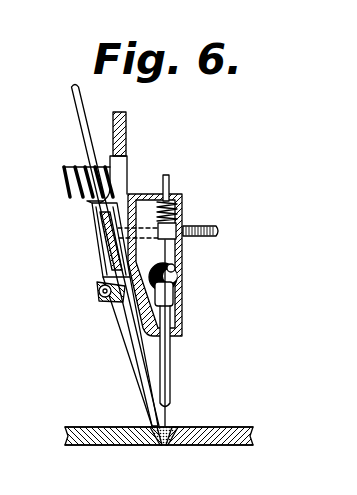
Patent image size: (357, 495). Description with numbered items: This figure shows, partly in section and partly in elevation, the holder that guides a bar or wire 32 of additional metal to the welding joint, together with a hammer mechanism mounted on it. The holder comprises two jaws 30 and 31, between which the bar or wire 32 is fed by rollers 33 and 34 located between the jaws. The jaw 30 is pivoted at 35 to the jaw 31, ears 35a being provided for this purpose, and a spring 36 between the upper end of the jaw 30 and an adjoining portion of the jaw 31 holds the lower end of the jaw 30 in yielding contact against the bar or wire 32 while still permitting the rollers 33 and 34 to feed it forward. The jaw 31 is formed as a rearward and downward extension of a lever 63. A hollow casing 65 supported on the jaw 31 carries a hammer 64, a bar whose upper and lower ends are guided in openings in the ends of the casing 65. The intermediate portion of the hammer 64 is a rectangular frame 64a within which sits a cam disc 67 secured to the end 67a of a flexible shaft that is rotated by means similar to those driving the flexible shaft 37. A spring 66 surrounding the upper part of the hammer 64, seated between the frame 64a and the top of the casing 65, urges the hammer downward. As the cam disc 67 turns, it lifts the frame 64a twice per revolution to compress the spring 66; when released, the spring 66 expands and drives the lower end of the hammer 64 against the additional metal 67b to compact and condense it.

The jaw 30 is at (135, 382).
The jaw 31 is at (163, 394).
The bar or wire 32 is at (75, 109).
The feeding roller 33 is at (96, 224).
The feeding roller 34 is at (101, 236).
The pivot 35 is at (99, 298).
The ears 35a is at (100, 303).
The spring 36 is at (83, 168).
The flexible shaft 37 is at (208, 226).
The lever 63 is at (127, 126).
The hammer 64 is at (171, 403).
The rectangular frame 64a is at (174, 300).
The hollow casing 65 is at (176, 318).
The spring 66 is at (176, 223).
The cam disc 67 is at (179, 270).
The end of flexible shaft 67a is at (175, 268).
The additional metal 67b is at (172, 424).